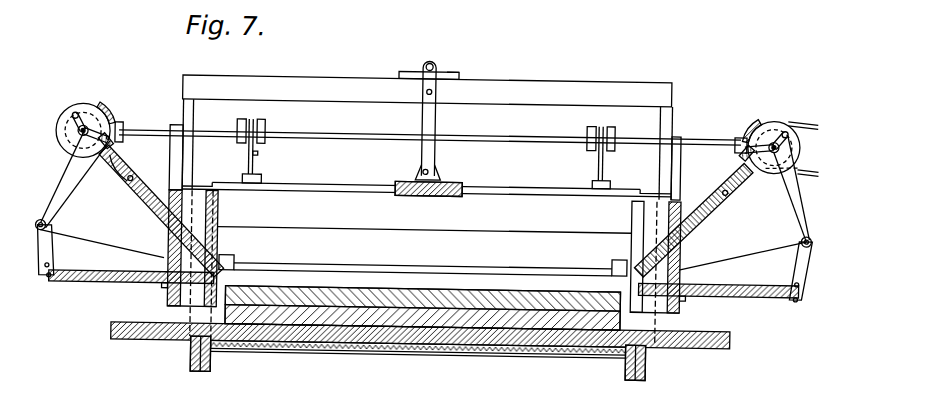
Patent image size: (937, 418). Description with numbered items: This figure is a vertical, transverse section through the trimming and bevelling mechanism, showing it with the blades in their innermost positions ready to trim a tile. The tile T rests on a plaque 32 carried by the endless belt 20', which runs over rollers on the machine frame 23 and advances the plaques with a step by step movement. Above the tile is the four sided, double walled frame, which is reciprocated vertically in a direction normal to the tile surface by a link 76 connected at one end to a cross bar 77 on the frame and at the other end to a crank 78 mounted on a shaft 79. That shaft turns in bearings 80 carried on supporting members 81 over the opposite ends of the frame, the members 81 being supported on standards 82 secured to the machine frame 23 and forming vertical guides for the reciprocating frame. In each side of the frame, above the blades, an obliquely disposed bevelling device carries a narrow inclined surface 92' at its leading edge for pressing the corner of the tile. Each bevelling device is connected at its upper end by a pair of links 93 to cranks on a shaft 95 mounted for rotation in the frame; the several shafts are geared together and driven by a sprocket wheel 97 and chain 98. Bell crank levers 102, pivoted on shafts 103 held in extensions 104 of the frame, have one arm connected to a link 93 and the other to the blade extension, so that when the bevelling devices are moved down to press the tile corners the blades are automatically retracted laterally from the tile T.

The endless belt 20' is at (417, 371).
The machine frame 23 is at (697, 341).
The plaques 32 is at (341, 341).
The link 76 is at (433, 120).
The cross bar 77 is at (462, 186).
The crank 78 is at (418, 72).
The shaft 79 is at (433, 66).
The bearings 80 is at (457, 74).
The supporting members 81 is at (641, 88).
The standards 82 is at (665, 125).
The narrow inclined surfaces 92' is at (423, 256).
The links 93 is at (132, 142).
The shaft 95 is at (328, 146).
The sprocket wheel 97 is at (768, 127).
The chain 98 is at (810, 121).
The bell crank levers 102 is at (72, 193).
The shafts 103 is at (57, 244).
The extensions 104 is at (116, 242).
The tiles T is at (494, 318).